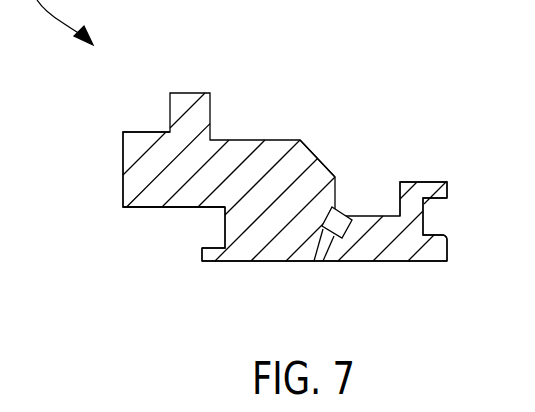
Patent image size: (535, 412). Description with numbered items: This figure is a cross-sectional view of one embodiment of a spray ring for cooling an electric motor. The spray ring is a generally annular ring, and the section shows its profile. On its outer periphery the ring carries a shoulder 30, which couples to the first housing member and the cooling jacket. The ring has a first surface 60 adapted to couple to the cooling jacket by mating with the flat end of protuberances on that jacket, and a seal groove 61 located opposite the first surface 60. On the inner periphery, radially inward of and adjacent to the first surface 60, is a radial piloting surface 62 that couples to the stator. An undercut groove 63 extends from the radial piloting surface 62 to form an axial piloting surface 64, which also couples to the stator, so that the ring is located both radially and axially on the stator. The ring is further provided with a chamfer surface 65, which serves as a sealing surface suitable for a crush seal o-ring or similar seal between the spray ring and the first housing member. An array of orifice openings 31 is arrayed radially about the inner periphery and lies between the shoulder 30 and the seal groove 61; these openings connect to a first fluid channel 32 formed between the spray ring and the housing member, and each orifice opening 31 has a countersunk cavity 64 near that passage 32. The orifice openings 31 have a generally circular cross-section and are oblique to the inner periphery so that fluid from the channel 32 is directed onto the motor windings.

The shoulder 30 is at (211, 107).
The orifice openings 31 is at (316, 262).
The first fluid channel 32 is at (399, 198).
The first surface 60 is at (123, 148).
The seal groove 61 is at (447, 199).
The radial piloting surface 62 is at (131, 209).
The undercut groove 63 is at (220, 222).
The axial piloting surface 64 is at (200, 250).
The chamfer surface 65 is at (317, 157).